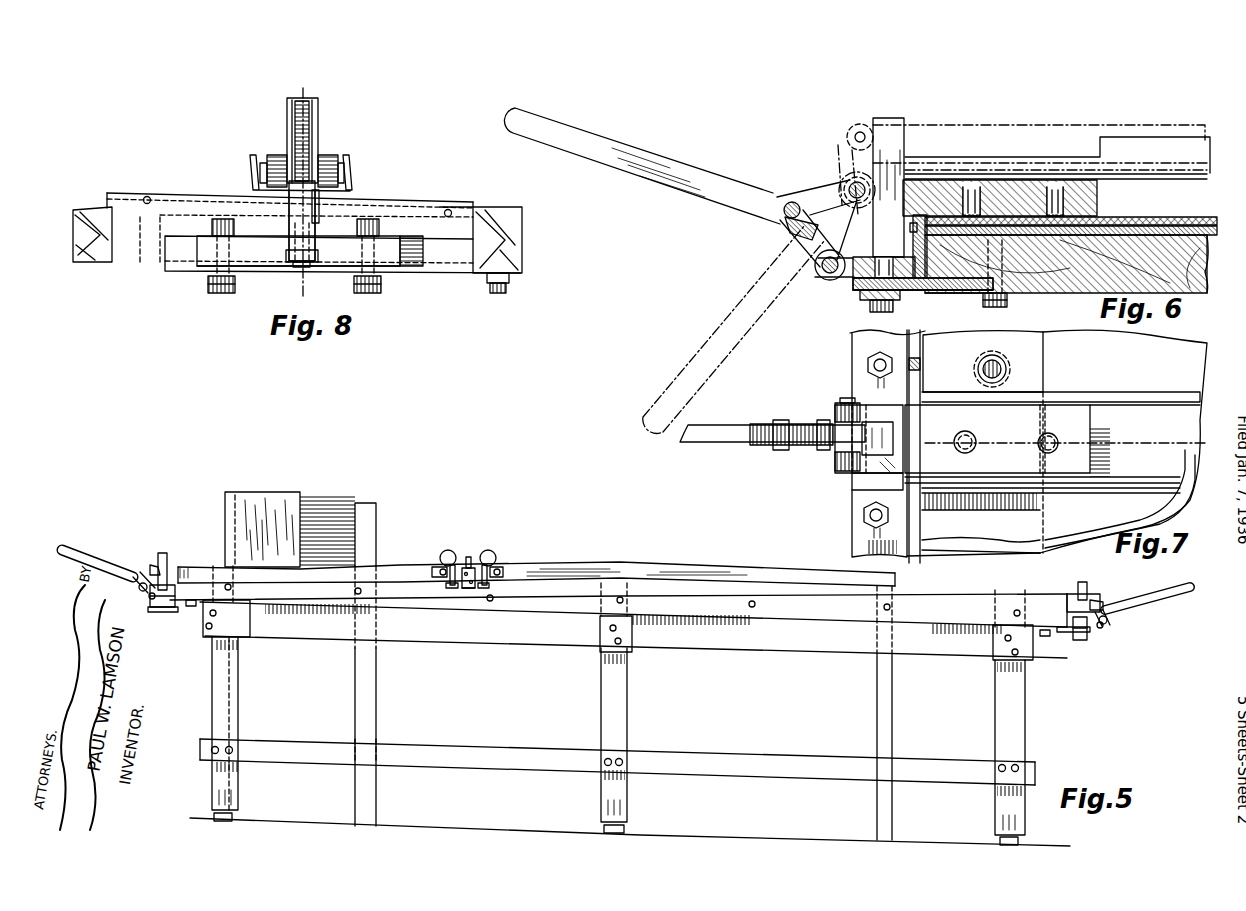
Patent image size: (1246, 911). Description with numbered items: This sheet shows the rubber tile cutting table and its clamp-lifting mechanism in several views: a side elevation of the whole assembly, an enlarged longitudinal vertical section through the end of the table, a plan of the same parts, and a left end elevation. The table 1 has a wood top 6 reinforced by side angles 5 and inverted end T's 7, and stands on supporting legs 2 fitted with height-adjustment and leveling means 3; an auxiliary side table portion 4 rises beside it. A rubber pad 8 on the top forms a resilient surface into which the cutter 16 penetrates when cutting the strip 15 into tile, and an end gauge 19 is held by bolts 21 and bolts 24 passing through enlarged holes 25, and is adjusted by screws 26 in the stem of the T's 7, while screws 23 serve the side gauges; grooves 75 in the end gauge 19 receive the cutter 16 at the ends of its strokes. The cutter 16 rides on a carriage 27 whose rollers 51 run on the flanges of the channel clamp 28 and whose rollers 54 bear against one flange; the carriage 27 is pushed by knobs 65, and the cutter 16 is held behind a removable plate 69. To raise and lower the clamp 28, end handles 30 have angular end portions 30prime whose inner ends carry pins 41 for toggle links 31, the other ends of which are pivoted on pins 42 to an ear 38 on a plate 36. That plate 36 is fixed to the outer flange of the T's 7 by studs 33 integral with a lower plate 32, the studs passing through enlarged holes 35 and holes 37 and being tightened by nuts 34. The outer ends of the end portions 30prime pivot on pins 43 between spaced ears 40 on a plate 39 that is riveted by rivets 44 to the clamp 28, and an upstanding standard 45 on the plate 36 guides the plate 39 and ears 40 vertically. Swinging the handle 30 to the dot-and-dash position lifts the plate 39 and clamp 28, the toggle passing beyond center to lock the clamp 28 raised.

In FIG. 8, the table 1 is at (520, 265).
In FIG. 6, the table 1 is at (1080, 293).
In FIG. 7, the table 1 is at (1000, 553).
In FIG. 5, the table 1 is at (673, 650).
In FIG. 5, the supporting legs 2 is at (240, 692).
In FIG. 5, the height-adjustment and leveling means 3 is at (232, 820).
In FIG. 5, the auxiliary side table portion 4 is at (372, 503).
In FIG. 5, the side angles 5 is at (577, 607).
In FIG. 8, the wood top 6 is at (100, 262).
In FIG. 6, the wood top 6 is at (1203, 293).
In FIG. 7, the wood top 6 is at (1043, 553).
In FIG. 8, the inverted end T's 7 is at (445, 262).
In FIG. 6, the inverted end T's 7 is at (935, 290).
In FIG. 7, the inverted end T's 7 is at (850, 546).
In FIG. 5, the inverted end T's 7 is at (172, 612).
In FIG. 6, the rubber pad 8 is at (1178, 228).
In FIG. 7, the rubber pad 8 is at (1090, 538).
In FIG. 6, the strip 15 is at (1152, 219).
In FIG. 7, the strip 15 is at (1072, 540).
In FIG. 5, the strip 15 is at (287, 503).
In FIG. 5, the cutter 16 is at (467, 595).
In FIG. 8, the end gauge 19 is at (106, 196).
In FIG. 6, the end gauge 19 is at (968, 293).
In FIG. 7, the end gauge 19 is at (962, 553).
In FIG. 5, the bolts 21 is at (238, 615).
In FIG. 5, the screws 23 is at (752, 606).
In FIG. 8, the bolts 24 is at (172, 290).
In FIG. 6, the bolts 24 is at (1007, 306).
In FIG. 7, the bolts 24 is at (1006, 368).
In FIG. 5, the bolts 24 is at (190, 614).
In FIG. 8, the enlarged holes 25 is at (160, 255).
In FIG. 6, the enlarged holes 25 is at (1008, 293).
In FIG. 7, the enlarged holes 25 is at (1004, 380).
In FIG. 8, the screws 26 is at (147, 196).
In FIG. 6, the screws 26 is at (910, 229).
In FIG. 7, the screws 26 is at (875, 352).
In FIG. 5, the carriage 27 is at (472, 566).
In FIG. 8, the channel clamp 28 is at (350, 160).
In FIG. 6, the channel clamp 28 is at (1170, 137).
In FIG. 7, the channel clamp 28 is at (1142, 410).
In FIG. 5, the channel clamp 28 is at (612, 583).
In FIG. 8, the end handles 30 is at (312, 105).
In FIG. 6, the end handles 30 is at (628, 150).
In FIG. 7, the end handles 30 is at (707, 447).
In FIG. 5, the end handles 30 is at (85, 553).
In FIG. 6, the angular end portions 30prime is at (840, 165).
In FIG. 7, the angular end portions 30prime is at (812, 452).
In FIG. 8, the toggle links 31 is at (289, 225).
In FIG. 6, the toggle links 31 is at (820, 226).
In FIG. 7, the toggle links 31 is at (800, 447).
In FIG. 5, the toggle links 31 is at (145, 580).
In FIG. 8, the plate 32 is at (372, 275).
In FIG. 6, the plate 32 is at (855, 292).
In FIG. 5, the plate 32 is at (158, 607).
In FIG. 8, the studs 33 is at (216, 268).
In FIG. 6, the studs 33 is at (868, 305).
In FIG. 7, the studs 33 is at (870, 367).
In FIG. 8, the nuts 34 is at (215, 222).
In FIG. 7, the nuts 34 is at (862, 360).
In FIG. 8, the enlarged holes 35 is at (220, 290).
In FIG. 8, the plate 36 is at (340, 266).
In FIG. 6, the plate 36 is at (852, 278).
In FIG. 7, the plate 36 is at (852, 492).
In FIG. 5, the plate 36 is at (165, 607).
In FIG. 8, the holes 37 is at (260, 248).
In FIG. 8, the ear 38 is at (300, 270).
In FIG. 6, the ear 38 is at (812, 270).
In FIG. 5, the ear 38 is at (152, 597).
In FIG. 8, the plate 39 is at (315, 150).
In FIG. 6, the plate 39 is at (1020, 170).
In FIG. 7, the plate 39 is at (1070, 410).
In FIG. 5, the plate 39 is at (180, 568).
In FIG. 8, the spaced ears 40 is at (270, 158).
In FIG. 6, the spaced ears 40 is at (860, 128).
In FIG. 7, the spaced ears 40 is at (840, 412).
In FIG. 5, the spaced ears 40 is at (152, 565).
In FIG. 8, the pins 41 is at (328, 210).
In FIG. 6, the pins 41 is at (790, 205).
In FIG. 7, the pins 41 is at (772, 420).
In FIG. 8, the pins 42 is at (290, 262).
In FIG. 6, the pins 42 is at (818, 268).
In FIG. 7, the pins 42 is at (815, 424).
In FIG. 8, the pins 43 is at (262, 170).
In FIG. 6, the pins 43 is at (866, 135).
In FIG. 7, the pins 43 is at (853, 403).
In FIG. 6, the rivets 44 is at (1097, 200).
In FIG. 7, the rivets 44 is at (1040, 445).
In FIG. 8, the upstanding standard 45 is at (290, 110).
In FIG. 6, the upstanding standard 45 is at (900, 118).
In FIG. 7, the upstanding standard 45 is at (878, 473).
In FIG. 5, the upstanding standard 45 is at (163, 552).
In FIG. 5, the rollers 51 is at (440, 567).
In FIG. 5, the rollers 54 is at (447, 585).
In FIG. 5, the knobs 65 is at (449, 550).
In FIG. 5, the removable plate 69 is at (468, 556).
In FIG. 6, the grooves 75 is at (1025, 186).